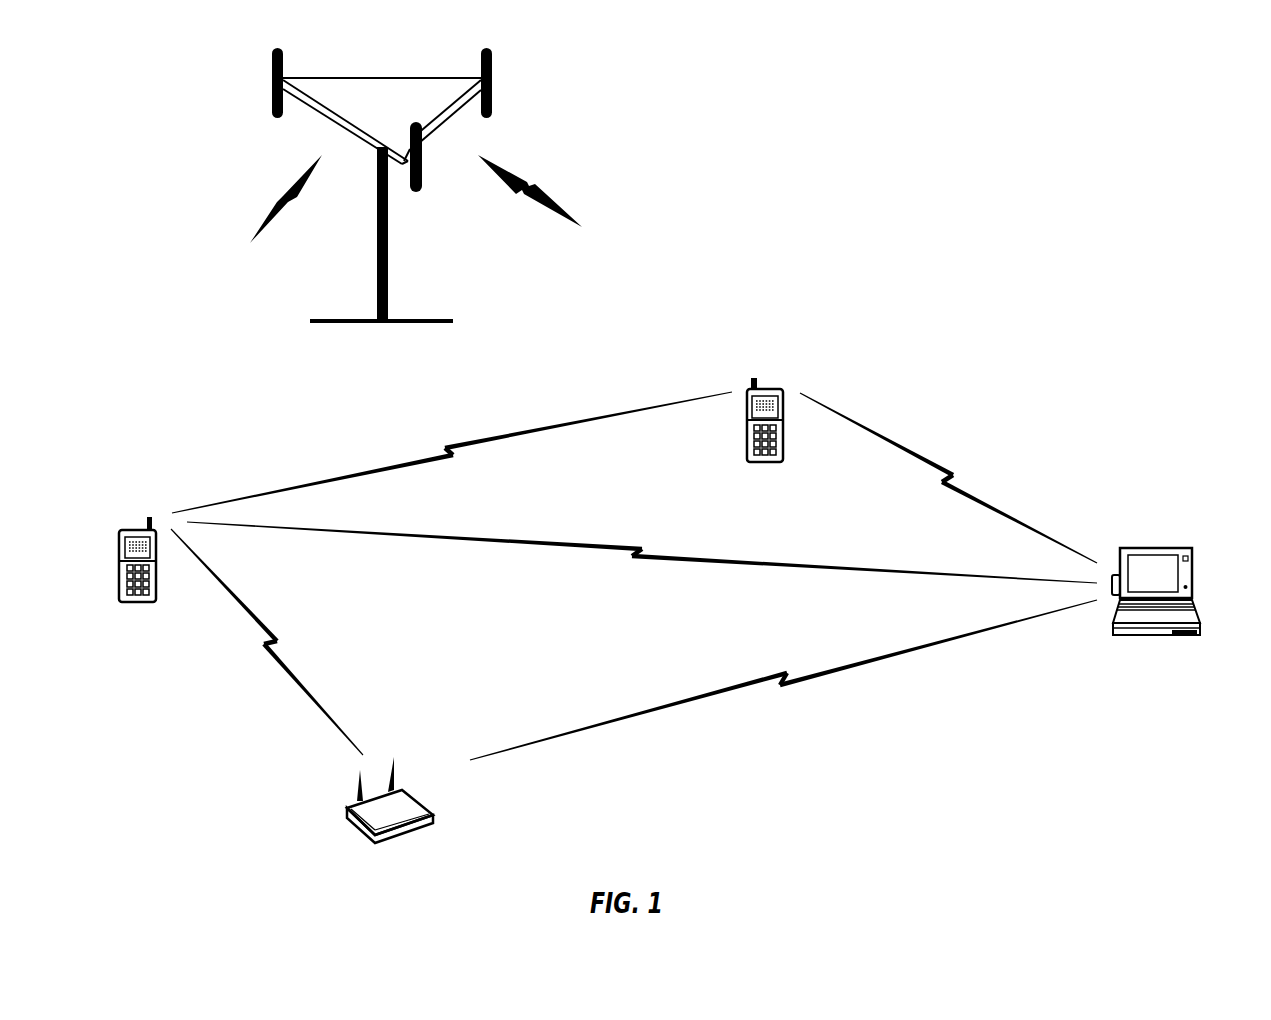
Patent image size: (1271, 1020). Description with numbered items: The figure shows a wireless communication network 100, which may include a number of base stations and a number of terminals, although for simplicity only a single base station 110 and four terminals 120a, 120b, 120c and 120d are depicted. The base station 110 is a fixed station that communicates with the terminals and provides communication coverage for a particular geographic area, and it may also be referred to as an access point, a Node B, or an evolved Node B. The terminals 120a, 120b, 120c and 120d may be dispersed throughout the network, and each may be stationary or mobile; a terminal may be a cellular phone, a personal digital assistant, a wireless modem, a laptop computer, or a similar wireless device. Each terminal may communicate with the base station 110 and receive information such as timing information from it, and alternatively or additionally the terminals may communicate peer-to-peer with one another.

The wireless communication network 100 is at (988, 139).
The base station 110 is at (377, 77).
The terminal 120a is at (133, 530).
The terminal 120b is at (417, 796).
The terminal 120c is at (771, 390).
The terminal 120d is at (1152, 548).